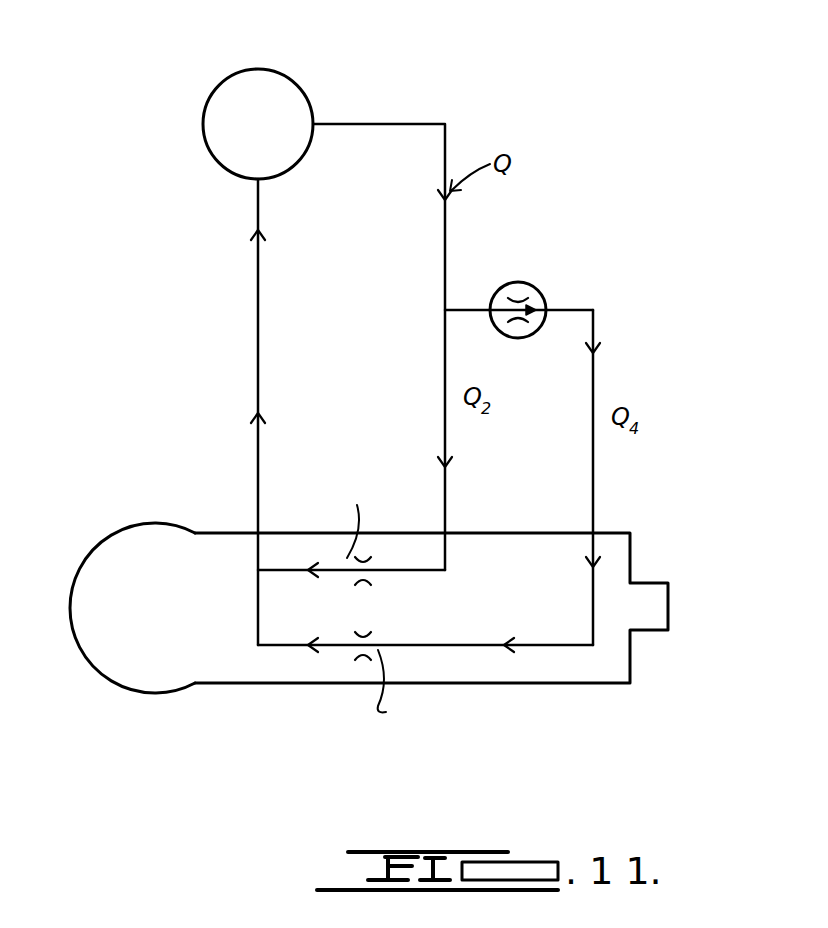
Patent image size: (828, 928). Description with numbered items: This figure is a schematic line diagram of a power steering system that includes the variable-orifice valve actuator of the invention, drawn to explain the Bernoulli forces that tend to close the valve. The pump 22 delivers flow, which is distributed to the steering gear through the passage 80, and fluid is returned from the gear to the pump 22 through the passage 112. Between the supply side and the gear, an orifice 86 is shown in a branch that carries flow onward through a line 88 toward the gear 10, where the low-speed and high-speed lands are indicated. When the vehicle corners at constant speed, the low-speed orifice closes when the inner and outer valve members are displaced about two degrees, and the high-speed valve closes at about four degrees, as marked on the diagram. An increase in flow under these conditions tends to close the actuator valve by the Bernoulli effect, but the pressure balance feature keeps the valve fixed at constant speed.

The pump 22 is at (278, 83).
The passage 80 is at (443, 258).
The passage 112 is at (258, 288).
The orifice 86 is at (522, 285).
The branch line 88 is at (593, 462).
The gear 10 is at (207, 557).